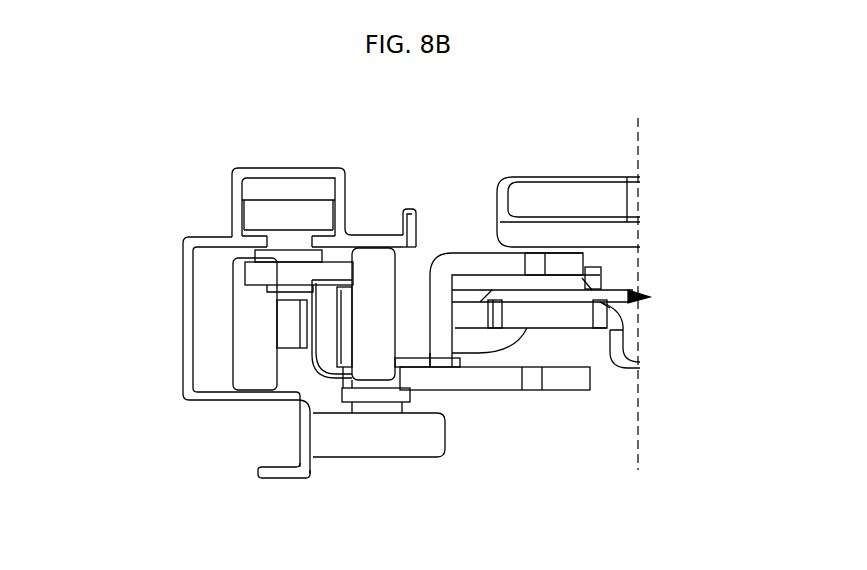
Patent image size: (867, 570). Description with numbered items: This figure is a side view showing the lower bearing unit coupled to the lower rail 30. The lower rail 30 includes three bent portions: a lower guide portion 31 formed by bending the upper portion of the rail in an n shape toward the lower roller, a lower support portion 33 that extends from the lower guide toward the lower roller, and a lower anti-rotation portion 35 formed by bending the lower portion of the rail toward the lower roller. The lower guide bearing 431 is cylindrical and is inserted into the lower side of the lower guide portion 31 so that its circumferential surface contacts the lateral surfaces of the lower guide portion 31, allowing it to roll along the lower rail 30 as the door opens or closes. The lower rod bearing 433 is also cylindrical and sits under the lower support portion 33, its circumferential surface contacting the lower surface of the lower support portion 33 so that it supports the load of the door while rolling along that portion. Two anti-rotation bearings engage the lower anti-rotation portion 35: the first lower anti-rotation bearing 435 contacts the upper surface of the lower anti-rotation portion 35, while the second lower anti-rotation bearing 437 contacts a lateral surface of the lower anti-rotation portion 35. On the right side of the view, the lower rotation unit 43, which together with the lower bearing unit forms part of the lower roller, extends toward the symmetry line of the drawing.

The lower rail 30 is at (152, 225).
The lower guide portion 31 is at (275, 167).
The lower guide bearing 431 is at (300, 210).
The lower support portion 33 is at (353, 248).
The lower rod bearing 433 is at (380, 234).
The first lower anti-rotation bearing 435 is at (248, 352).
The lower anti-rotation portion 35 is at (307, 470).
The second lower anti-rotation bearing 437 is at (445, 440).
The lower rotation unit 43 is at (632, 322).